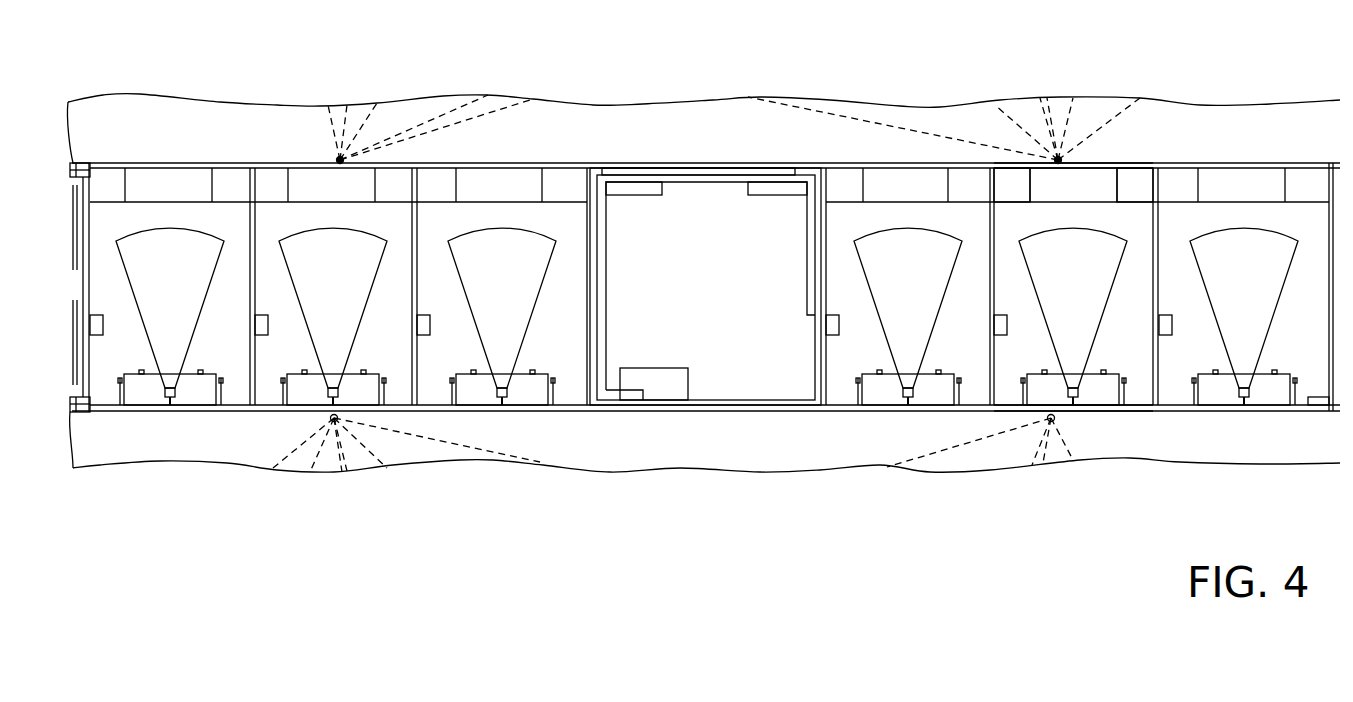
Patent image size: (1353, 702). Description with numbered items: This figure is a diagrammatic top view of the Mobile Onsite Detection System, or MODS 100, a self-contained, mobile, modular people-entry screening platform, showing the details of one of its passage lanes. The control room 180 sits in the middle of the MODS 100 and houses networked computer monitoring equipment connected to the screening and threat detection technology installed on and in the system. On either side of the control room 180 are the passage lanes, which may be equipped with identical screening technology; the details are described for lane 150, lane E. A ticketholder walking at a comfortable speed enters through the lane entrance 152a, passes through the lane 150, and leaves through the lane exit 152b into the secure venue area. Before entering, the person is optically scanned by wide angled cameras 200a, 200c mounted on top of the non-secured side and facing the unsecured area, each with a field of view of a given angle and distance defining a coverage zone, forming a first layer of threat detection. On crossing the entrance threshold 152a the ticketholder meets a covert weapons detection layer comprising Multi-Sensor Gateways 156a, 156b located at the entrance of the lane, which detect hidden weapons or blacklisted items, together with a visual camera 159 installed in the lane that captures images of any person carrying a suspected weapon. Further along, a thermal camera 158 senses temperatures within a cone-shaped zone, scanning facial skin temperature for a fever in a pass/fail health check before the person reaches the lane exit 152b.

The Mobile Onsite Detection System 100 is at (252, 173).
The lane 150 is at (965, 283).
The lane entrance 152a is at (1092, 165).
The lane exit 152b is at (1145, 412).
The Multi-Sensor Gateway 156a is at (1010, 175).
The Multi-Sensor Gateway 156b is at (1132, 175).
The thermal camera 158 is at (1073, 397).
The visual camera 159 is at (1000, 337).
The control room 180 is at (698, 223).
The wide angled camera 200a is at (340, 160).
The wide angled camera 200c is at (1058, 160).